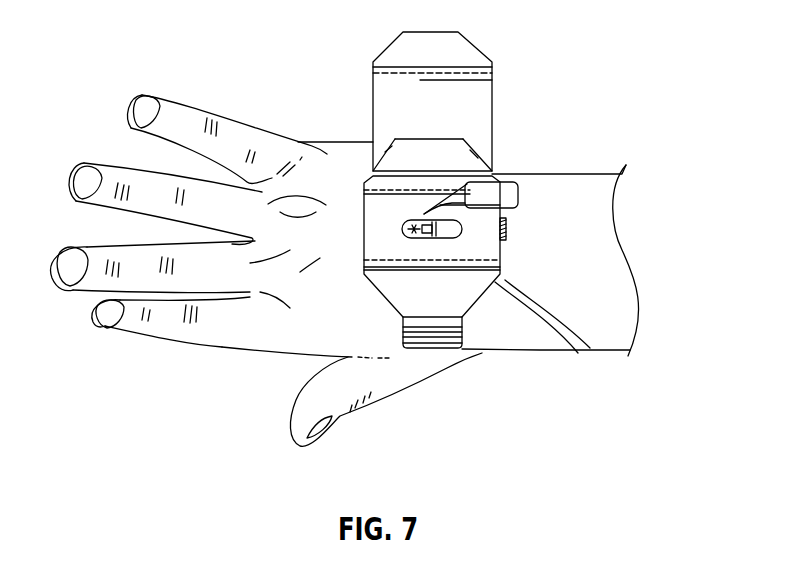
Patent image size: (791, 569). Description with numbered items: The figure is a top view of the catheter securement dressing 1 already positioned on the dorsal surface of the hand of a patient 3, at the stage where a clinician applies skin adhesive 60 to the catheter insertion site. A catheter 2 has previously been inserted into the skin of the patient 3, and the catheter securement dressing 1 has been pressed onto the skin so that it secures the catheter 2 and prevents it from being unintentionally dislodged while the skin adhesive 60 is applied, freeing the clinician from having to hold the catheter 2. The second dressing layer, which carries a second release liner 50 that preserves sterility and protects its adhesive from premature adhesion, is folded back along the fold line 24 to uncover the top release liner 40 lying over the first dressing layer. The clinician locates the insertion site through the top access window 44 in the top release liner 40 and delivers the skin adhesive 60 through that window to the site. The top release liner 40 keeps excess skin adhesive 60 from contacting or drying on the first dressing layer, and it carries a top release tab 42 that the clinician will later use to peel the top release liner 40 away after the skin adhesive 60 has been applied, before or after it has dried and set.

The catheter securement dressing 1 is at (596, 91).
The catheter 2 is at (507, 227).
The patient 3 is at (308, 142).
The fold line 24 is at (492, 157).
The top release liner 40 is at (488, 258).
The top release tab 42 is at (464, 351).
The top access window 44 is at (452, 239).
The second release liner 50 is at (479, 64).
The skin adhesive 60 is at (514, 194).